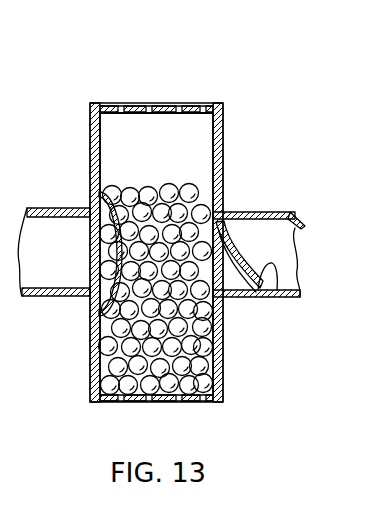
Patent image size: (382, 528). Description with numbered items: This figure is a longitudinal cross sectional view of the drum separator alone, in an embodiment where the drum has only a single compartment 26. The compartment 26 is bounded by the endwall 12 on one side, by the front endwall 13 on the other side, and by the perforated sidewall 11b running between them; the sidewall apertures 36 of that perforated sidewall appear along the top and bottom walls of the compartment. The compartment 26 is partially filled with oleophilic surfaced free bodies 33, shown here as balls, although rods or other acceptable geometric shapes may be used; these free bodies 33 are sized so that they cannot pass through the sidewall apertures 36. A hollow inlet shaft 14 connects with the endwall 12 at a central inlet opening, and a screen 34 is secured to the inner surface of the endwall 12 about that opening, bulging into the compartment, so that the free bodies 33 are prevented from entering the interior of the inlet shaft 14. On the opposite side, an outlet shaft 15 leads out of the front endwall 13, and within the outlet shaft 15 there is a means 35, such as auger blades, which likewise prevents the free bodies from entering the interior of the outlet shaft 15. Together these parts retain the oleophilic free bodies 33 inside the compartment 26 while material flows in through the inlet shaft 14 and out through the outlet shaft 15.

The perforated sidewall 11b is at (128, 114).
The endwall 12 is at (90, 153).
The front endwall 13 is at (223, 167).
The hollow inlet shaft 14 is at (48, 298).
The outlet shaft 15 is at (258, 212).
The compartment 26 is at (203, 130).
The oleophilic surfaced free bodies 33 is at (100, 378).
The screen 34 is at (112, 251).
The means to prevent free bodies from entering shaft 35 is at (272, 298).
The sidewall apertures 36 is at (190, 104).